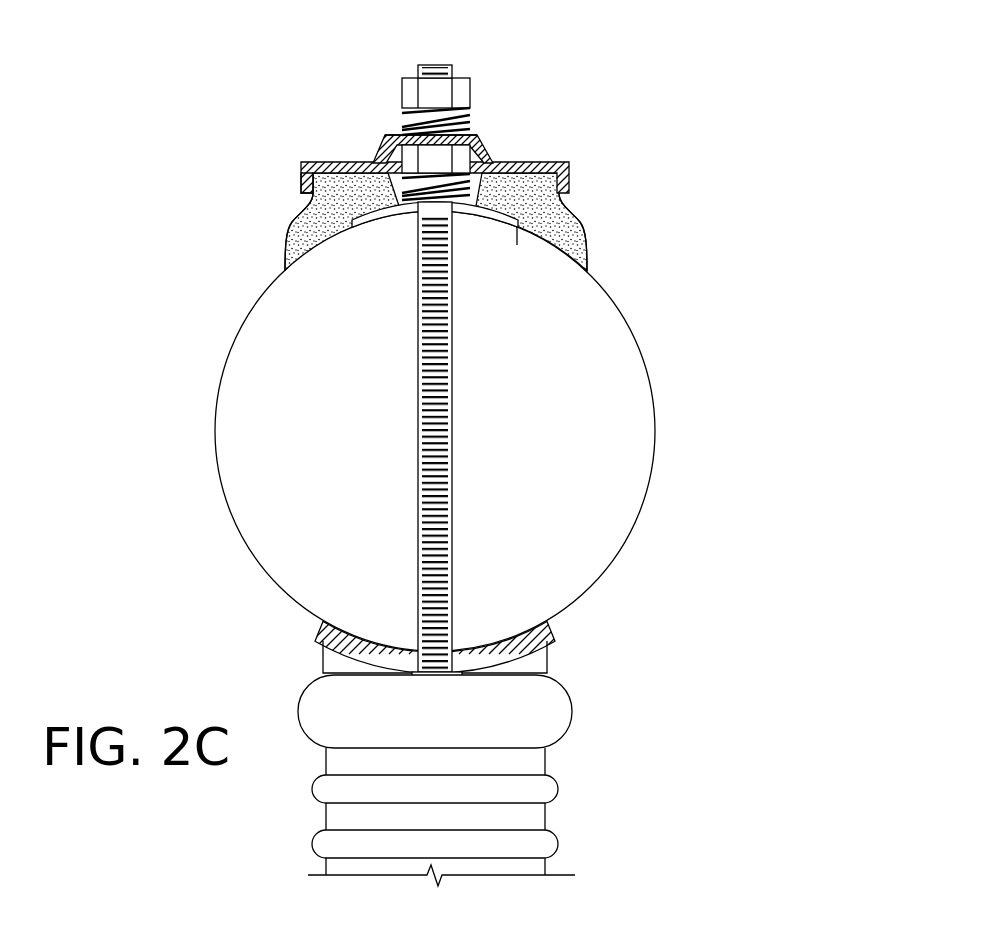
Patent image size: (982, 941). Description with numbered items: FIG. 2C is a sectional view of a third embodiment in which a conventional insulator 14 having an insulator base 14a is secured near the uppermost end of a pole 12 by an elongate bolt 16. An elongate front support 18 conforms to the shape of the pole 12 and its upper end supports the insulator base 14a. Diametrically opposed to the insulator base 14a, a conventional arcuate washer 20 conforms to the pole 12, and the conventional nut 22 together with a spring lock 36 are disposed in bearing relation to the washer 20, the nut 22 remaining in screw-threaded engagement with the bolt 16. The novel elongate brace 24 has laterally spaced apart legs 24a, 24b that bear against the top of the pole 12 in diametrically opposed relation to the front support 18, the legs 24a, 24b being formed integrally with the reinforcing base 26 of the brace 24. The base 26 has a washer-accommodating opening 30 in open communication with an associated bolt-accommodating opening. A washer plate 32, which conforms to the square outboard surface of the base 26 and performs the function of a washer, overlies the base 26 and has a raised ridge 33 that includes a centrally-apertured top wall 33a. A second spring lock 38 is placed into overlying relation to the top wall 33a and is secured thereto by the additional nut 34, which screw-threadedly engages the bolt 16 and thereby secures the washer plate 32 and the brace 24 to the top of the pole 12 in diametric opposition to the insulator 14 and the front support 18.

The pole 12 is at (640, 513).
The insulator 14 is at (558, 790).
The insulator base 14a is at (572, 712).
The elongate bolt 16 is at (453, 558).
The front support 18 is at (553, 643).
The washer 20 is at (517, 227).
The nut 22 is at (401, 152).
The elongate brace 24 is at (569, 213).
The leg 24a is at (286, 248).
The leg 24b is at (589, 250).
The base 26 is at (302, 184).
The washer-accommodating opening 30 is at (350, 228).
The washer plate 32 is at (566, 165).
The raised ridge 33 is at (493, 152).
The top wall 33a is at (487, 138).
The nut 34 is at (411, 85).
The spring lock 36 is at (378, 170).
The second spring lock 38 is at (405, 113).